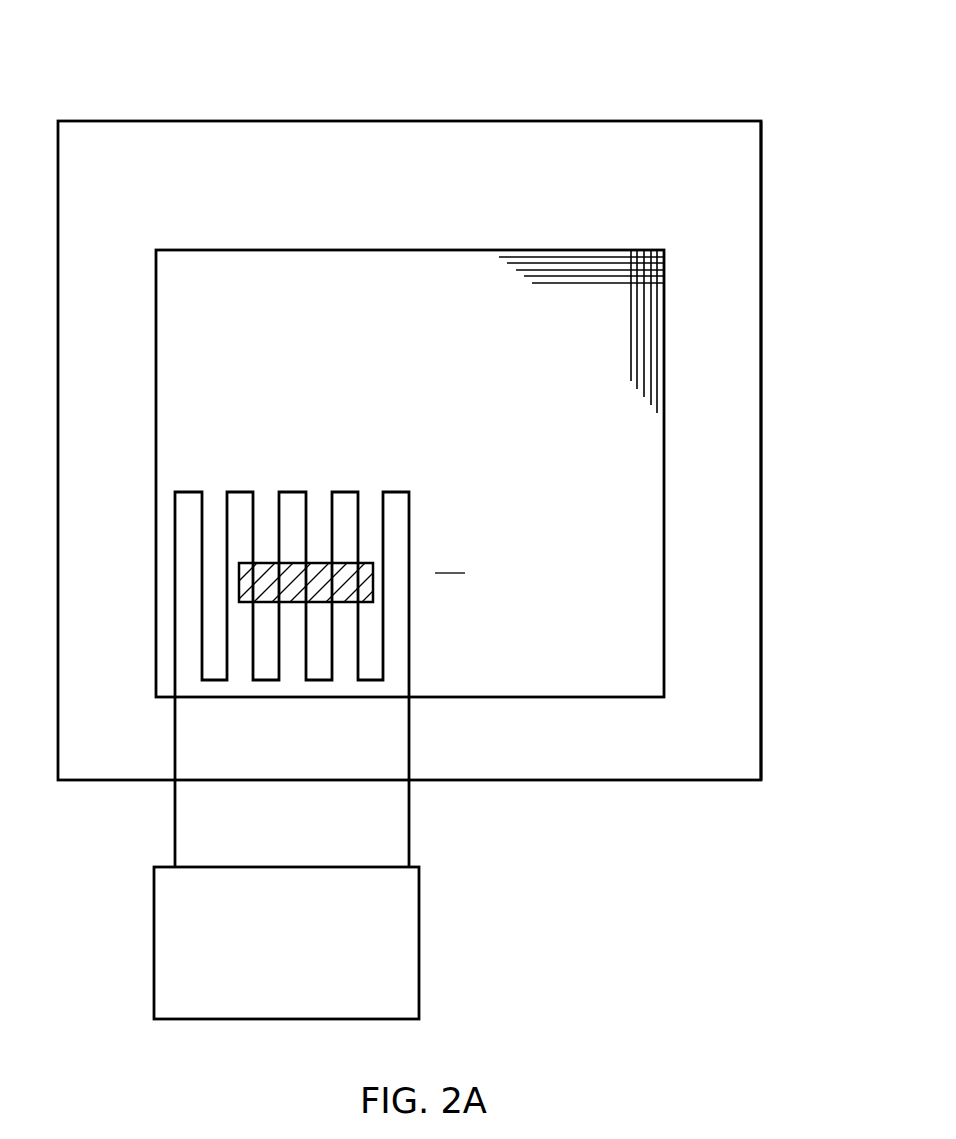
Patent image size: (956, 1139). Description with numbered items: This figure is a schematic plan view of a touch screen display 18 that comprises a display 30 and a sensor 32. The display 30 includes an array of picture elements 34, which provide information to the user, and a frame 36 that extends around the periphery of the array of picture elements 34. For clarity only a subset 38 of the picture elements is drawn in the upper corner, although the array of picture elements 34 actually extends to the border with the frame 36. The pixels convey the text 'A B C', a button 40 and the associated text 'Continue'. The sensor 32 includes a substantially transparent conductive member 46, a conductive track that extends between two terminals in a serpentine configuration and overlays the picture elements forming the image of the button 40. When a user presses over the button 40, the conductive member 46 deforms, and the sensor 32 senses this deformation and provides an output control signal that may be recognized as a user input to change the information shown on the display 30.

The touch screen display 18 is at (424, 68).
The display 30 is at (747, 110).
The sensor 32 is at (466, 932).
The array of picture elements 34 is at (408, 273).
The frame 36 is at (742, 360).
The subset of the array of picture elements 38 is at (650, 236).
The button 40 is at (362, 563).
The conductive member 46 is at (409, 807).